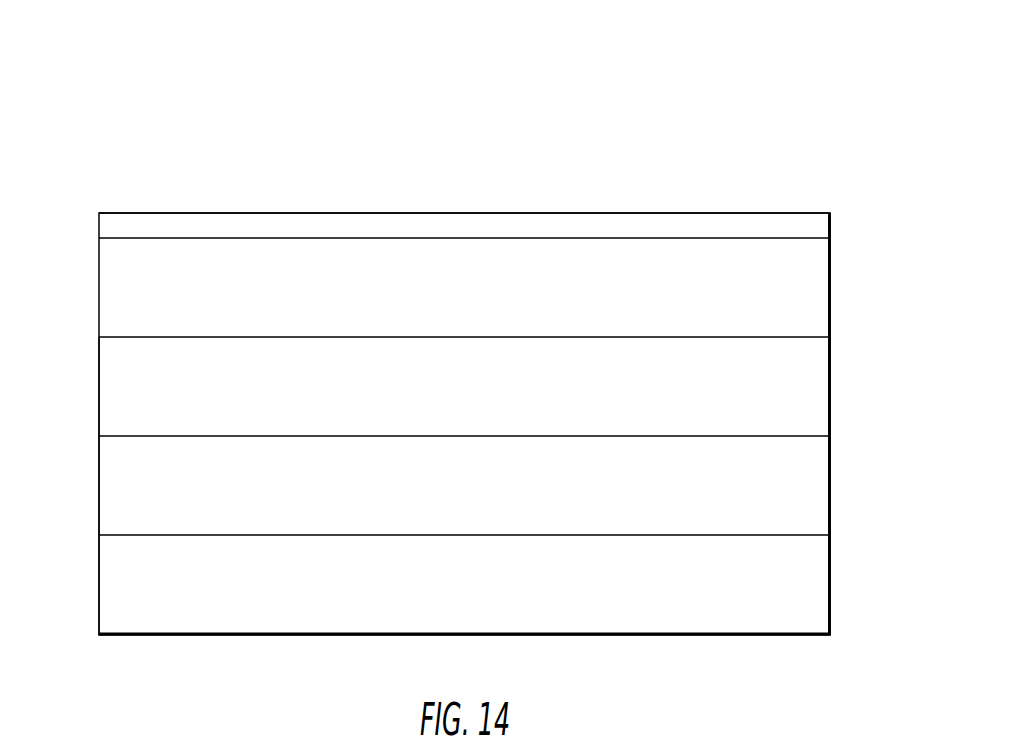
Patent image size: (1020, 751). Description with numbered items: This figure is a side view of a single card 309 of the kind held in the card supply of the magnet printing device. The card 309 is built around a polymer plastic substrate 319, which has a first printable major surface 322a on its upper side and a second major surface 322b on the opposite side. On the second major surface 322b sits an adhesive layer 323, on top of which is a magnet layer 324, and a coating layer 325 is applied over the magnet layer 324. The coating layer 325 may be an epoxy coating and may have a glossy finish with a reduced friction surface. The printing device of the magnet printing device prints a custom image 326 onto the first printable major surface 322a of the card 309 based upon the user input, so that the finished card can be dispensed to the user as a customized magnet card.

The card 309 is at (777, 81).
The polymer plastic substrate 319 is at (803, 272).
The first printable major surface 322a is at (150, 238).
The second major surface 322b is at (137, 338).
The adhesive layer 323 is at (832, 375).
The magnet layer 324 is at (832, 489).
The coating layer 325 is at (832, 603).
The custom image 326 is at (306, 225).